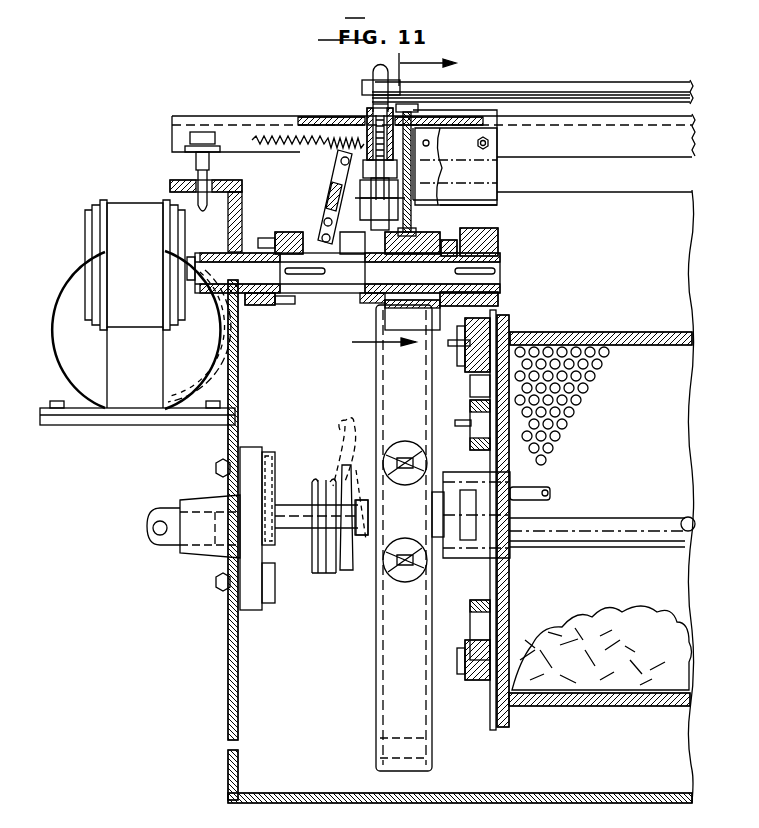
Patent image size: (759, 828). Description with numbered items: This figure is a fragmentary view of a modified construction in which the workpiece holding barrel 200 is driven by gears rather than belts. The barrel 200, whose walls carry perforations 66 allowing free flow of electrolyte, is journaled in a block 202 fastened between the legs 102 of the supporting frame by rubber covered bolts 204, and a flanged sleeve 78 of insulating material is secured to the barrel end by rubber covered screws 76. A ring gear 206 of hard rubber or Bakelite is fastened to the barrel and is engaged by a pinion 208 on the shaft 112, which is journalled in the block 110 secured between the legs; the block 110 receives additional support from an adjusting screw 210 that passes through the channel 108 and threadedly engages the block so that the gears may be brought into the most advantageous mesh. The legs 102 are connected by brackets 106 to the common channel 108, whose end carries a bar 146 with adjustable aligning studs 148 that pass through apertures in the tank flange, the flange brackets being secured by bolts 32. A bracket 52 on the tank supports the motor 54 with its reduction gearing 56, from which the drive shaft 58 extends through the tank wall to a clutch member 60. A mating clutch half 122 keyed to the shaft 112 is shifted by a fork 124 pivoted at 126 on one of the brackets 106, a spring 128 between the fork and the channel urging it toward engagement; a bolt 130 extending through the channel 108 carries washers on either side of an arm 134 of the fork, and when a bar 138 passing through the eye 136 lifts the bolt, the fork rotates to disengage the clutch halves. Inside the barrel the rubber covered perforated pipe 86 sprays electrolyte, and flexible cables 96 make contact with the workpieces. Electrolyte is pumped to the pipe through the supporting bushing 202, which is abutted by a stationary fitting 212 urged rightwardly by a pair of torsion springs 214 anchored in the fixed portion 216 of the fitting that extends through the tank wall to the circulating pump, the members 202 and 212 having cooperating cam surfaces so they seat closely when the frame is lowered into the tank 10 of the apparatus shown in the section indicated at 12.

The housing 10 is at (228, 640).
The section line 12 is at (406, 202).
The bolts 32 is at (375, 212).
The bracket 52 is at (88, 426).
The motor 54 is at (62, 330).
The reduction gearing 56 is at (131, 210).
The drive shaft 58 is at (200, 298).
The clutch member 60 is at (242, 298).
The perforations 66 is at (588, 348).
The rubber covered screws 76 is at (468, 430).
The flanged sleeve 78 is at (466, 568).
The perforated pipe 86 is at (594, 524).
The flexible cables 96 is at (525, 490).
The legs 102 is at (378, 666).
The brackets 106 is at (487, 183).
The channel member 108 is at (172, 142).
The block 110 is at (385, 308).
The shaft 112 is at (459, 262).
The clutch member 122 is at (292, 248).
The fork 124 is at (322, 228).
The pivot 126 is at (342, 156).
The spring 128 is at (284, 174).
The bolt 130 is at (376, 118).
The arm 134 is at (368, 194).
The eye 136 is at (368, 72).
The bar 138 is at (564, 80).
The bar 146 is at (188, 150).
The aligning studs 148 is at (203, 206).
The workpiece holding barrel 200 is at (660, 334).
The block 202 is at (364, 578).
The rubber covered bolts 204 is at (406, 550).
The ring gear 206 is at (492, 330).
The pinion 208 is at (500, 248).
The adjusting screw 210 is at (455, 152).
The stationary fitting 212 is at (316, 576).
The torsion springs 214 is at (312, 484).
The fixed portion 216 is at (240, 550).